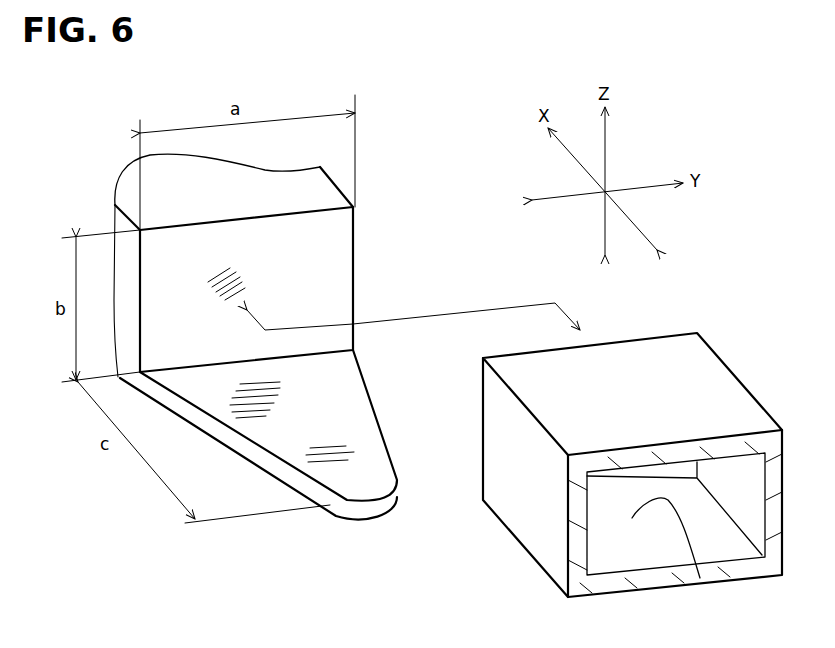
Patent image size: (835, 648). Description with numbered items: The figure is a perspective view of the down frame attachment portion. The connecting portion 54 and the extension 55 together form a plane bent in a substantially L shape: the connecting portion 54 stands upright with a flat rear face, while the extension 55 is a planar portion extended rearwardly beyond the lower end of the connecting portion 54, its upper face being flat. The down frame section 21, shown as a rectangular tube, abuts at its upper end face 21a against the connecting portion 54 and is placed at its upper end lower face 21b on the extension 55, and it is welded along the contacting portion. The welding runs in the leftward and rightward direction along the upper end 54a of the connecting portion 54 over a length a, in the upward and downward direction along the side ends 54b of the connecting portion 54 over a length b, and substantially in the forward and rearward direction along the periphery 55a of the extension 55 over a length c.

The down frame section 21 is at (668, 350).
The upper end face 21a is at (482, 388).
The upper end lower face 21b is at (700, 578).
The connecting portion 54 is at (305, 264).
The upper end 54a is at (310, 208).
The side ends 54b is at (139, 305).
The extension 55 is at (340, 402).
The periphery 55a is at (195, 425).